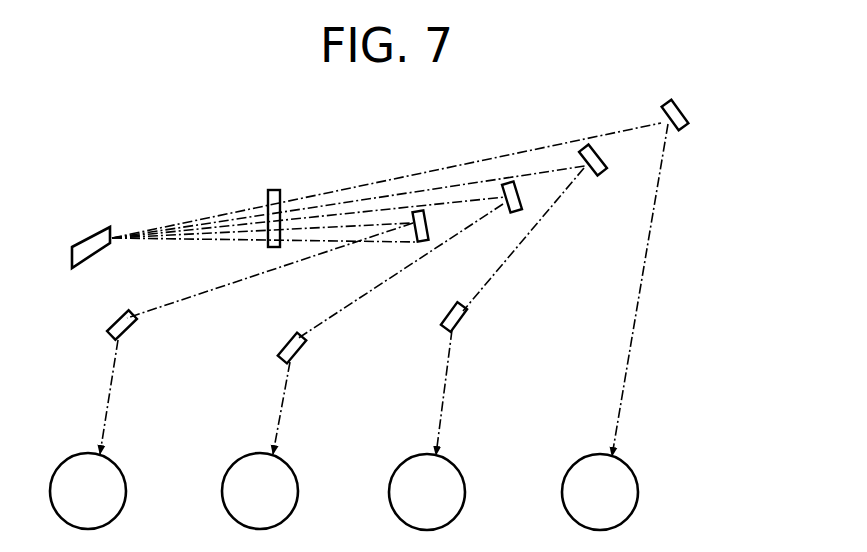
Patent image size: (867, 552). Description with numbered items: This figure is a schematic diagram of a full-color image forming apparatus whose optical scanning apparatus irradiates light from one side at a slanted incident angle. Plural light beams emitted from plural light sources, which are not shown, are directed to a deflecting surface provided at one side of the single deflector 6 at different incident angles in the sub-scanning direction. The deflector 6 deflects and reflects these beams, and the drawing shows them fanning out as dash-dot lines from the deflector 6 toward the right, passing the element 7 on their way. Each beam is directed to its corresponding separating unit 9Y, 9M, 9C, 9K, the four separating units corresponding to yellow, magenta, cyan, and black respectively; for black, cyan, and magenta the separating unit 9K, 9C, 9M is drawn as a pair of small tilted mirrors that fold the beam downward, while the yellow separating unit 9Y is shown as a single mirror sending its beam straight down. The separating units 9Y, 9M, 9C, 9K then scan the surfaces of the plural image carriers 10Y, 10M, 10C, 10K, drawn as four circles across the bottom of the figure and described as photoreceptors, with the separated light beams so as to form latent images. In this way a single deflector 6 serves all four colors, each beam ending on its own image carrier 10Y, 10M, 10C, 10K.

The deflector 6 is at (93, 234).
The scanning lens 7 is at (272, 190).
The separating unit 9K is at (416, 241).
The separating unit 9C is at (506, 213).
The separating unit 9M is at (598, 176).
The separating unit 9Y is at (685, 105).
The image carrier 10K is at (140, 445).
The image carrier 10C is at (313, 445).
The image carrier 10M is at (478, 445).
The image carrier 10Y is at (652, 445).